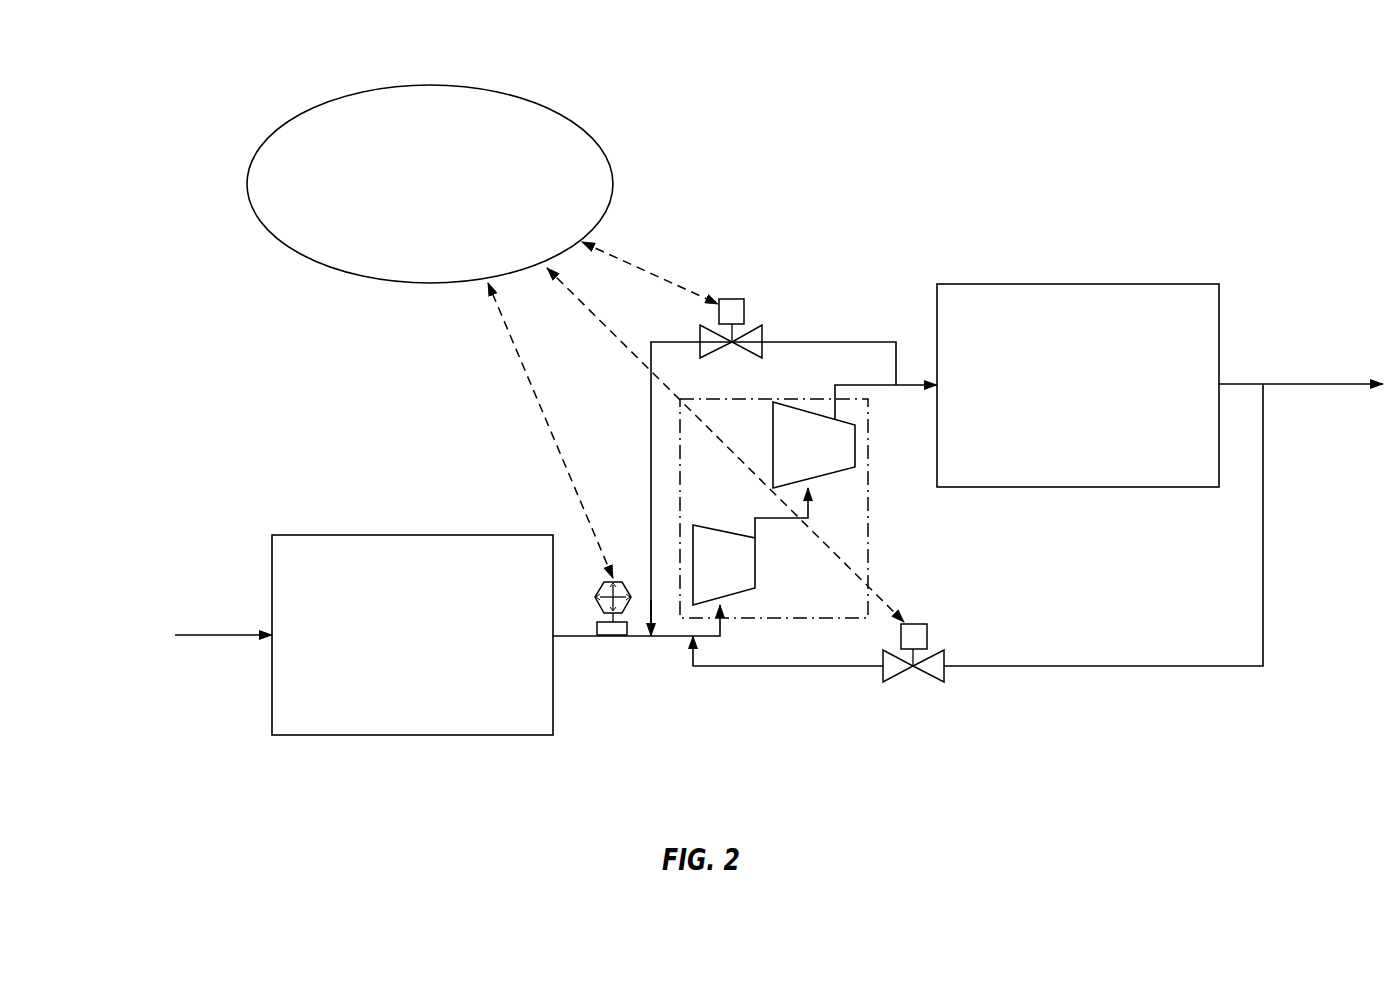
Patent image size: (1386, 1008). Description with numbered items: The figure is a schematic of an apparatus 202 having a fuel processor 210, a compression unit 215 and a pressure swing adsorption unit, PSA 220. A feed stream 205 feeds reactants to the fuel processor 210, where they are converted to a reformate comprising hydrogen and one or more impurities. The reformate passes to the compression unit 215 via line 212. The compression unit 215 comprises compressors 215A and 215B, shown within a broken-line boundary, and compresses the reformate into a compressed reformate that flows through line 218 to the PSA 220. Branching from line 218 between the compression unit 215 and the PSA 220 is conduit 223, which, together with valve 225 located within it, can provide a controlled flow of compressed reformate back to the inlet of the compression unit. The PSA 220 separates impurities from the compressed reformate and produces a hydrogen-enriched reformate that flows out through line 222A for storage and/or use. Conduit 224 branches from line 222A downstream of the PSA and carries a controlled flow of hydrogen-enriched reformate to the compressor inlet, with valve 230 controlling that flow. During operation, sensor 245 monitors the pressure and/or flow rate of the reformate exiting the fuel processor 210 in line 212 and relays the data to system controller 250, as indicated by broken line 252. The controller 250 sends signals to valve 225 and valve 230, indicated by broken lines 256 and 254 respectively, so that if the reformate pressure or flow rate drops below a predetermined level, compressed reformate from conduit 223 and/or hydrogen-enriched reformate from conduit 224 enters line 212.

The apparatus 202 is at (142, 106).
The feed stream 205 is at (159, 651).
The fuel processor 210 is at (437, 650).
The line 212 is at (573, 640).
The compression unit 215 is at (812, 508).
The compressor 215A is at (767, 583).
The compressor 215B is at (847, 461).
The line 218 is at (908, 389).
The PSA 220 is at (1103, 399).
The line 222A is at (1323, 384).
The conduit 223 is at (848, 342).
The conduit 224 is at (1264, 564).
The valve 225 is at (752, 333).
The valve 230 is at (932, 662).
The sensor 245 is at (631, 600).
The system controller 250 is at (454, 199).
The broken line 252 is at (527, 373).
The broken line 254 is at (617, 338).
The broken line 256 is at (640, 268).